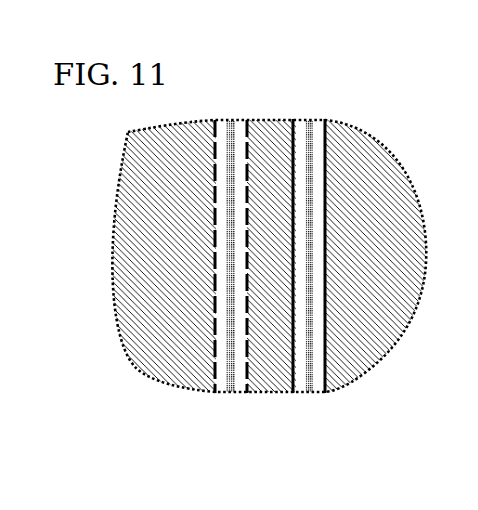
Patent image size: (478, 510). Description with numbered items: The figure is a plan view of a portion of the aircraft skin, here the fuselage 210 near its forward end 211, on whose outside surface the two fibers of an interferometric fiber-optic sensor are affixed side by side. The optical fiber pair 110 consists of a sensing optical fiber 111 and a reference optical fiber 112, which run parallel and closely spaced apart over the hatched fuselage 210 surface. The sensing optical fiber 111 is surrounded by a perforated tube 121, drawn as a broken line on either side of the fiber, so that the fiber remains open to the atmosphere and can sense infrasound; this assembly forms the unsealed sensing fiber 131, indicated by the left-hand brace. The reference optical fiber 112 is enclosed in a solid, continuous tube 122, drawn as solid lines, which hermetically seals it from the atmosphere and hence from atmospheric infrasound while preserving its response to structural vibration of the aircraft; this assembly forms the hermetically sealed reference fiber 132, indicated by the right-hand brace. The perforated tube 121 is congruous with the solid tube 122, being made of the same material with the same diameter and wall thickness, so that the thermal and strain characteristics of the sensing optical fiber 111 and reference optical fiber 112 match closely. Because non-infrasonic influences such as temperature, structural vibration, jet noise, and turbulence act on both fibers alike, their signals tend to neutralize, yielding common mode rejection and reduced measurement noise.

The fuselage 210 is at (236, 257).
The forward end 211 is at (147, 192).
The perforated tube 121 is at (214, 233).
The optical fiber pair 110 is at (147, 256).
The sensing optical fiber 111 is at (213, 300).
The solid tube 122 is at (325, 232).
The reference optical fiber 112 is at (325, 325).
The unsealed sensing fiber 131 is at (215, 402).
The hermetically sealed reference fiber 132 is at (293, 402).